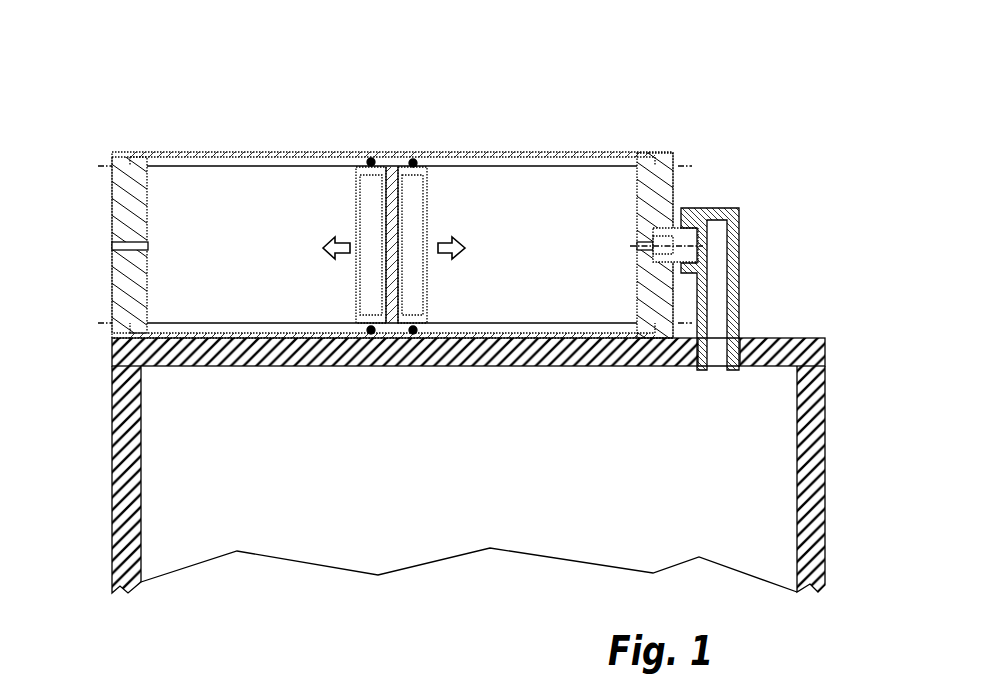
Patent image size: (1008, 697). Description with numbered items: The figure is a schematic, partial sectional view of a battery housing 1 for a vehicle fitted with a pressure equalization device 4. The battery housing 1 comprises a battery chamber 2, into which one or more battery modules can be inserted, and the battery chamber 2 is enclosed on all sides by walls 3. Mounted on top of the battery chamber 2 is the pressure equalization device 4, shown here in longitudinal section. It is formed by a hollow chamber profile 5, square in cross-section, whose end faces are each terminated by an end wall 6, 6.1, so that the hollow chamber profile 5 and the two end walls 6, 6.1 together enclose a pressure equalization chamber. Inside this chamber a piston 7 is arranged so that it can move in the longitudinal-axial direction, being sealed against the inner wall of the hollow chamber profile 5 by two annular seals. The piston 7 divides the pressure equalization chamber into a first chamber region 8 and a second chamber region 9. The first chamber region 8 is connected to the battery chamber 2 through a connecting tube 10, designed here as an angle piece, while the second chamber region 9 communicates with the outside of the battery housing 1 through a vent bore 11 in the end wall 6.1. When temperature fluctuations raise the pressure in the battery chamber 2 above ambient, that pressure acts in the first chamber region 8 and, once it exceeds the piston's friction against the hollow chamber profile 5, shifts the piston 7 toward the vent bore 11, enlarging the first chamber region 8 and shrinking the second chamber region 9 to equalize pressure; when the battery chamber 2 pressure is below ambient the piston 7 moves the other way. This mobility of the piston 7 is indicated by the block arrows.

The battery housing 1 is at (758, 168).
The battery chamber 2 is at (468, 465).
The walls 3 is at (212, 367).
The pressure equalization device 4 is at (291, 136).
The hollow chamber profile 5 is at (515, 152).
The end wall 6 is at (674, 195).
The end wall 6.1 is at (150, 220).
The piston 7 is at (413, 205).
The first chamber region 8 is at (487, 248).
The second chamber region 9 is at (302, 253).
The connecting tube 10 is at (740, 293).
The vent bore 11 is at (112, 240).